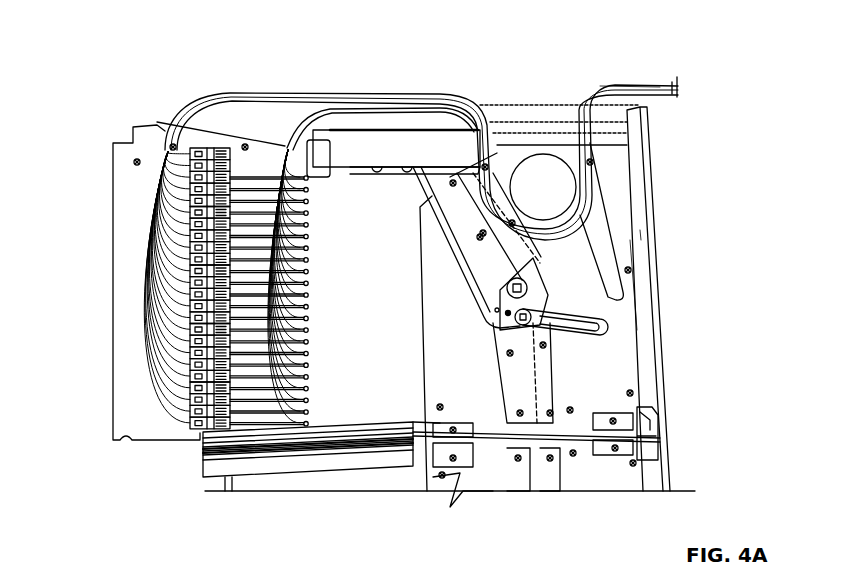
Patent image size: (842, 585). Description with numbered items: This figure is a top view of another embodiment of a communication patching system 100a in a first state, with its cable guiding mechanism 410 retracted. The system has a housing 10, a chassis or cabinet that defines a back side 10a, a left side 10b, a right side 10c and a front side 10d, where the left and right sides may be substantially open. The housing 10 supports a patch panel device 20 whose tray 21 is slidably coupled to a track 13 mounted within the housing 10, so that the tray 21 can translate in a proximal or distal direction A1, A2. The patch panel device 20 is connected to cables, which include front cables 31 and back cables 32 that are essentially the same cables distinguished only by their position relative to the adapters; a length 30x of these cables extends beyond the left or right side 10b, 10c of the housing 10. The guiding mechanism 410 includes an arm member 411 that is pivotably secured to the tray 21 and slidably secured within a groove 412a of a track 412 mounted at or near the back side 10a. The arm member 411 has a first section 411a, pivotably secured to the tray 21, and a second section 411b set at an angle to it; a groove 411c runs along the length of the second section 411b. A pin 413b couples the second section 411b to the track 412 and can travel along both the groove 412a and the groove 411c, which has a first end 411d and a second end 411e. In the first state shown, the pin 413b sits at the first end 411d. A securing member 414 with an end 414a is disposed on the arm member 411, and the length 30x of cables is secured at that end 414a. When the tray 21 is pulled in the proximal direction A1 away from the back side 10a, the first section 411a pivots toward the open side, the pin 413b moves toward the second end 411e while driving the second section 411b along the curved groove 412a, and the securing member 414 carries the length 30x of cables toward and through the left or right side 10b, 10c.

The communication patching system 100a is at (153, 28).
The proximal direction A1 is at (162, 80).
The distal direction A2 is at (266, 80).
The length of cables 30x is at (313, 90).
The track 13 is at (367, 167).
The first section 411a is at (445, 195).
The arm member 411 is at (447, 177).
The left side 10b is at (550, 117).
The front cables 31 is at (618, 82).
The back cables 32 is at (667, 78).
The end of securing member 414a is at (563, 197).
The guiding mechanism 410 is at (678, 171).
The securing member 414 is at (583, 233).
The back side 10a is at (640, 231).
The pin 413b is at (560, 310).
The second section 411b is at (597, 330).
The second end of groove 411e is at (580, 337).
The groove 411c is at (560, 365).
The groove of track 412a is at (560, 403).
The track 412 is at (632, 385).
The housing 10 is at (633, 478).
The right side 10c is at (577, 453).
The first end of groove 411d is at (510, 380).
The patch panel device 20 is at (325, 382).
The tray 21 is at (338, 407).
The front side 10d is at (188, 461).